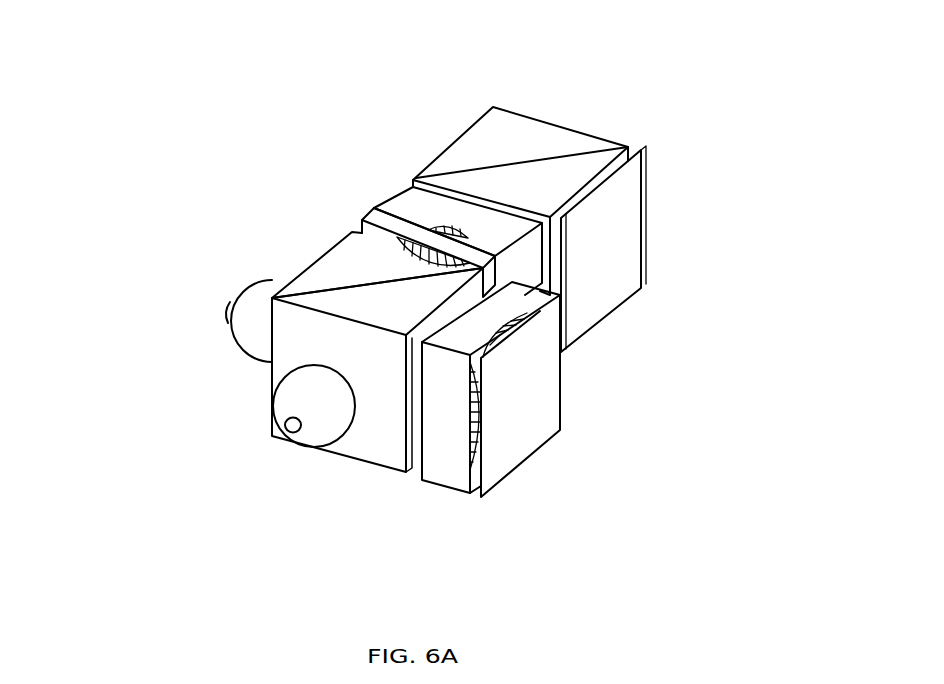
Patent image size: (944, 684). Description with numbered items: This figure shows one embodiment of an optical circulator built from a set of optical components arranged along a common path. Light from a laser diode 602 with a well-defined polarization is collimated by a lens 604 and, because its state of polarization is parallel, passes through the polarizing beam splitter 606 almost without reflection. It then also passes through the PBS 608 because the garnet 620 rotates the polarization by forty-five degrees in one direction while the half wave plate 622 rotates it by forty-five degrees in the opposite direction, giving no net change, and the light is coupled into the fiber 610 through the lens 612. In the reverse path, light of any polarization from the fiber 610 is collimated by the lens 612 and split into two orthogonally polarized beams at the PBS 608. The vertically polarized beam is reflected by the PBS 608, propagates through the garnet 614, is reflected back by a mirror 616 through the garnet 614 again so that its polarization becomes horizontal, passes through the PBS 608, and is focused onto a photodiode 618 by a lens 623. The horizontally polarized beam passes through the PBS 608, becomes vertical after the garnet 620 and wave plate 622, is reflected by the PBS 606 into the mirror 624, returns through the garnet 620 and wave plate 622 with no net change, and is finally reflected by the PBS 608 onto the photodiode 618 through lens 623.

The laser diode 602 is at (570, 96).
The lens 604 is at (642, 130).
The polarizing beam splitter (PBS) 606 is at (440, 128).
The PBS 608 is at (293, 248).
The fiber 610 is at (296, 457).
The lens 612 is at (257, 418).
The garnet 614 is at (443, 519).
The mirror 616 is at (579, 407).
The photodiode 618 is at (193, 313).
The garnet 620 is at (352, 181).
The half wave plate 622 is at (329, 216).
The lens 623 is at (231, 368).
The mirror 624 is at (660, 249).